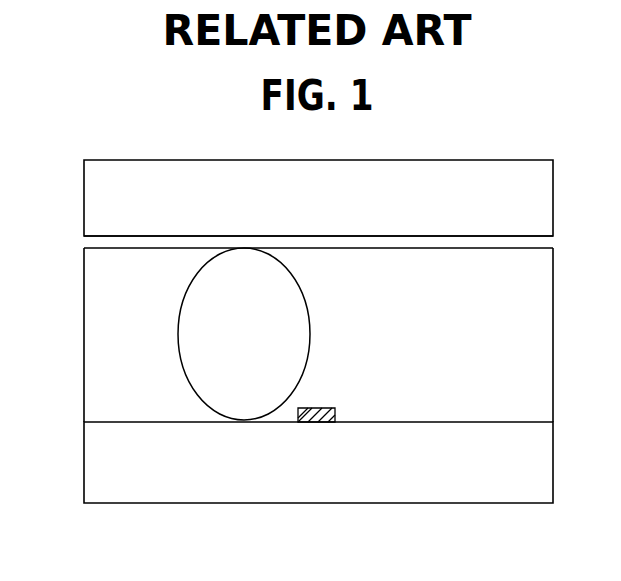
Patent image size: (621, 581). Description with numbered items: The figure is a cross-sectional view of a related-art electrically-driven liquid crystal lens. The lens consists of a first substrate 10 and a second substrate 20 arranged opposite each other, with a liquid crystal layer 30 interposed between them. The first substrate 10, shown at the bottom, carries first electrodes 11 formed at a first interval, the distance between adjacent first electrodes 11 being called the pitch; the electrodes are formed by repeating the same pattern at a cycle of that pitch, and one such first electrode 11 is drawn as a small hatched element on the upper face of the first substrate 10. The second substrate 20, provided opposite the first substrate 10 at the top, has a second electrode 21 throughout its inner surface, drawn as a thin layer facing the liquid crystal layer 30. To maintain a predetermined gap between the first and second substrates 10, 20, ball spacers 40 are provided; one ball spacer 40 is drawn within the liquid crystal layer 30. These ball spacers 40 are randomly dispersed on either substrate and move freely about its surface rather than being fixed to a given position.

The first substrate 10 is at (548, 465).
The first electrode 11 is at (318, 412).
The second substrate 20 is at (548, 199).
The second electrode 21 is at (548, 241).
The liquid crystal layer 30 is at (548, 332).
The ball spacer 40 is at (185, 340).